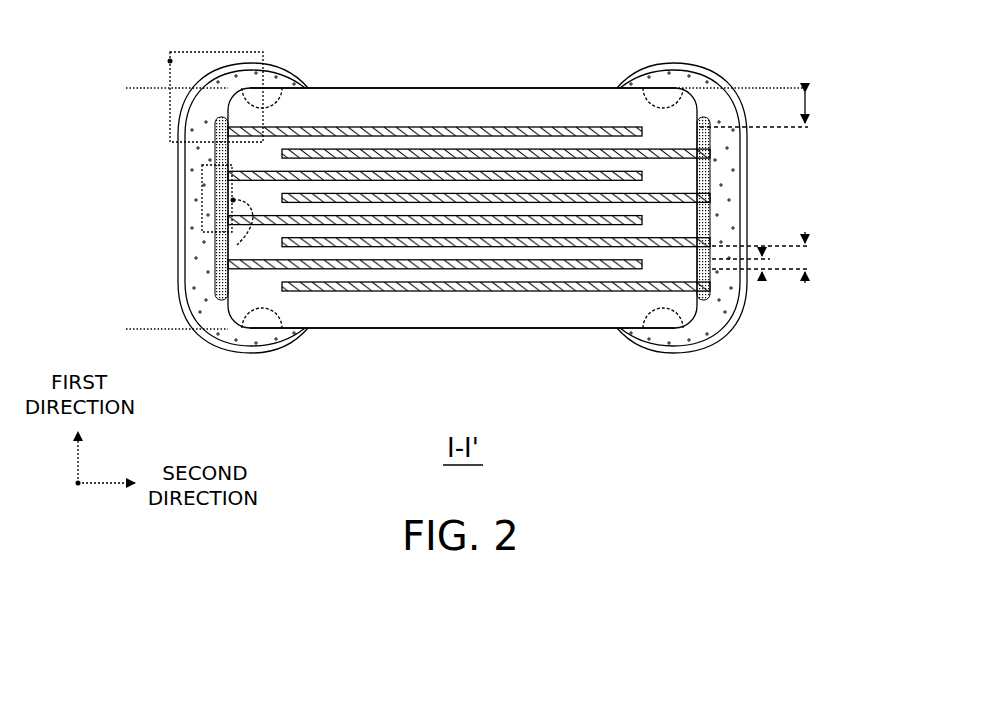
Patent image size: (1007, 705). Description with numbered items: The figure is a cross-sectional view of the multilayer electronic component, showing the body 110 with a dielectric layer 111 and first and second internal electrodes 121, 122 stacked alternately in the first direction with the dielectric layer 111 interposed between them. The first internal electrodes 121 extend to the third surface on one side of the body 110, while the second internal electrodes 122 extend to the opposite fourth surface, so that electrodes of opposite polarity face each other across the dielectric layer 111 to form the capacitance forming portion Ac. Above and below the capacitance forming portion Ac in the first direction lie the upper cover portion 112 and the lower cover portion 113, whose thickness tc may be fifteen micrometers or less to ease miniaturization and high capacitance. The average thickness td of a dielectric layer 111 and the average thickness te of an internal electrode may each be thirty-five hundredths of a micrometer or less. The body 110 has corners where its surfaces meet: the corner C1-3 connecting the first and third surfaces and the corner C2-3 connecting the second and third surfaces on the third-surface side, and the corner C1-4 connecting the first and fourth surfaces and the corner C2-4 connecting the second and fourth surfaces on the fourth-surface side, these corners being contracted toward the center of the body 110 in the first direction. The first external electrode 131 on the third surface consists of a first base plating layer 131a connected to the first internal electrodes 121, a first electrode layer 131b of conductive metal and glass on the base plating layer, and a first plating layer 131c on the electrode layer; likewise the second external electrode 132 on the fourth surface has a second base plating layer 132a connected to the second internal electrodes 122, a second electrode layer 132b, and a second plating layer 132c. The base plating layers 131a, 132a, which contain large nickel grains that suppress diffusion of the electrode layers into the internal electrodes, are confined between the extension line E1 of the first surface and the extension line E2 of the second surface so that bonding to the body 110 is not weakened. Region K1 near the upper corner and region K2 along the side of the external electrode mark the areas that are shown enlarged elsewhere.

The body 110 is at (397, 88).
The dielectric layer 111 is at (330, 150).
The upper cover portion 112 is at (458, 94).
The lower cover portion 113 is at (477, 328).
The first internal electrode 121 is at (506, 127).
The second internal electrode 122 is at (574, 150).
The first external electrode 131 is at (176, 208).
The first base plating layer 131a is at (213, 157).
The first electrode layer 131b is at (197, 181).
The first plating layer 131c is at (177, 214).
The second external electrode 132 is at (748, 208).
The second base plating layer 132a is at (717, 148).
The second electrode layer 132b is at (728, 177).
The second plating layer 132c is at (745, 210).
The capacitance forming portion Ac is at (555, 300).
The 1-3 corner C1-3 is at (280, 338).
The 1-4 corner C1-4 is at (647, 338).
The 2-3 corner C2-3 is at (275, 90).
The 2-4 corner C2-4 is at (649, 98).
The extension line of the first surface E1 is at (162, 329).
The extension line of the second surface E2 is at (162, 88).
The region K1 is at (168, 61).
The region K2 is at (205, 242).
The thickness of the cover portions tc is at (755, 107).
The average thickness of the dielectric layer td is at (773, 257).
The average thickness of the internal electrode te is at (751, 265).